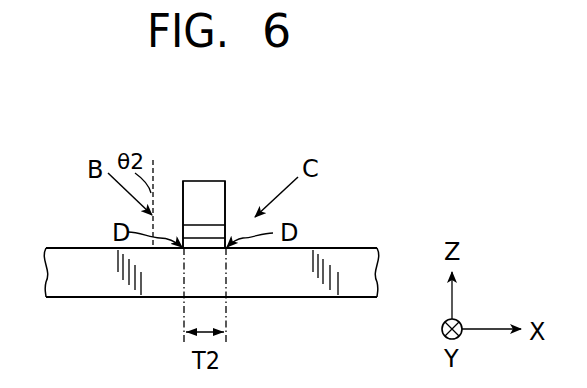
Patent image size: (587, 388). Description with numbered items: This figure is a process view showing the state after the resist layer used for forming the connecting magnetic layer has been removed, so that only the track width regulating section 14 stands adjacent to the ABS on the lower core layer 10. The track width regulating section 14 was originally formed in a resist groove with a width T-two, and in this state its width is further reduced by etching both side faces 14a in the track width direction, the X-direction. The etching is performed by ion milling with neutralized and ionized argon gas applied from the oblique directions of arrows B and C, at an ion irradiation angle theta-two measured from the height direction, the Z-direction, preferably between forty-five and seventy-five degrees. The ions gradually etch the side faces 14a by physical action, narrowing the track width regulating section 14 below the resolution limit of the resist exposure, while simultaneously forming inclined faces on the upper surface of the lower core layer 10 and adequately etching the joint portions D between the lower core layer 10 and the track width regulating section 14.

The lower core layer 10 is at (285, 278).
The track width regulating section 14 is at (205, 180).
The side faces 14a is at (182, 203).